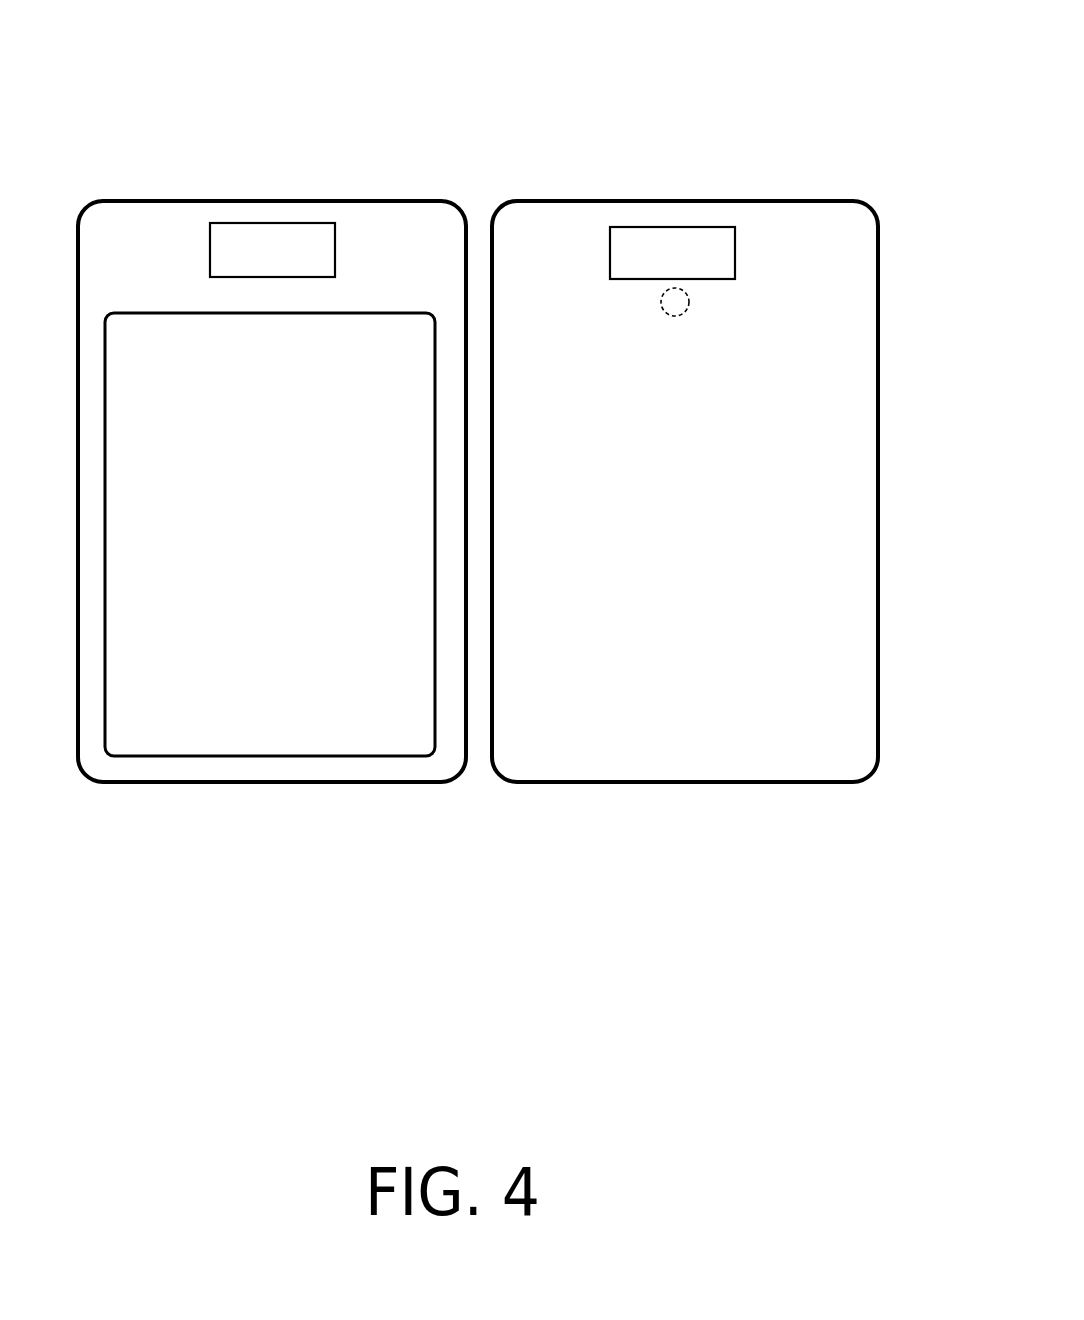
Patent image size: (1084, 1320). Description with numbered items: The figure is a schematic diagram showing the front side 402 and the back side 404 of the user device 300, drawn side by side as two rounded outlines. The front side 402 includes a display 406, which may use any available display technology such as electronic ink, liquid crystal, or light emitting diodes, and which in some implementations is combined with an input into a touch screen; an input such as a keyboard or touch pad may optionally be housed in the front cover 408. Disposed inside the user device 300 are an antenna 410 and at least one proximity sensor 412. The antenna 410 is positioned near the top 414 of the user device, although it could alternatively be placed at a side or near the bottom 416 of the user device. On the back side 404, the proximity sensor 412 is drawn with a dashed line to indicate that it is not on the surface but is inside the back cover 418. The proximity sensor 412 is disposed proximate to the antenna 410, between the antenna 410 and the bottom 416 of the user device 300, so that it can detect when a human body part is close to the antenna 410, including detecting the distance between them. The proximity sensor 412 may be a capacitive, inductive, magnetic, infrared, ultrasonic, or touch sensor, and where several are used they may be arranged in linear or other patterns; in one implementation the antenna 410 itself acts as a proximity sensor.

The user device 300 is at (575, 136).
The front side 402 is at (246, 148).
The back side 404 is at (666, 148).
The display 406 is at (323, 544).
The front cover 408 is at (463, 785).
The antenna 410 is at (288, 270).
The proximity sensor 412 is at (660, 306).
The top of the user device 414 is at (790, 188).
The bottom of the user device 416 is at (817, 818).
The back cover 418 is at (868, 787).